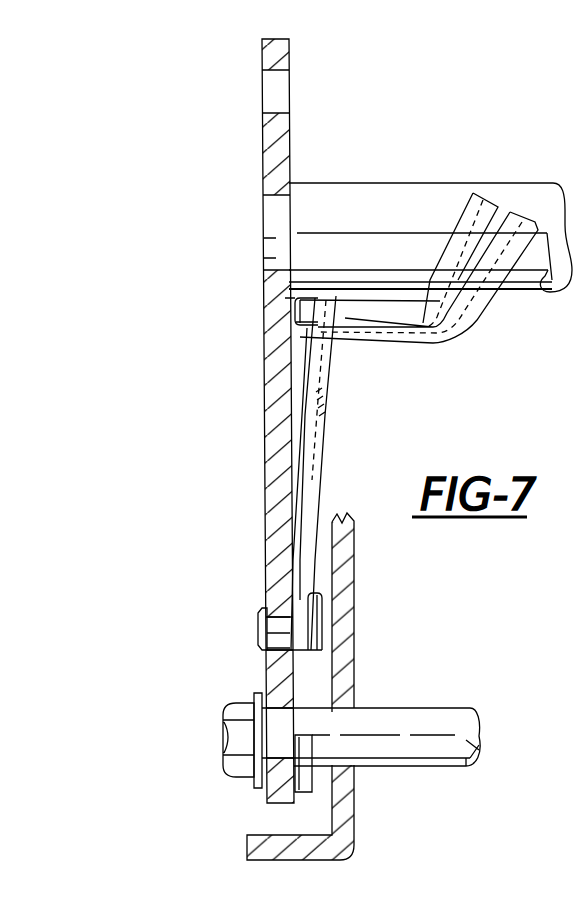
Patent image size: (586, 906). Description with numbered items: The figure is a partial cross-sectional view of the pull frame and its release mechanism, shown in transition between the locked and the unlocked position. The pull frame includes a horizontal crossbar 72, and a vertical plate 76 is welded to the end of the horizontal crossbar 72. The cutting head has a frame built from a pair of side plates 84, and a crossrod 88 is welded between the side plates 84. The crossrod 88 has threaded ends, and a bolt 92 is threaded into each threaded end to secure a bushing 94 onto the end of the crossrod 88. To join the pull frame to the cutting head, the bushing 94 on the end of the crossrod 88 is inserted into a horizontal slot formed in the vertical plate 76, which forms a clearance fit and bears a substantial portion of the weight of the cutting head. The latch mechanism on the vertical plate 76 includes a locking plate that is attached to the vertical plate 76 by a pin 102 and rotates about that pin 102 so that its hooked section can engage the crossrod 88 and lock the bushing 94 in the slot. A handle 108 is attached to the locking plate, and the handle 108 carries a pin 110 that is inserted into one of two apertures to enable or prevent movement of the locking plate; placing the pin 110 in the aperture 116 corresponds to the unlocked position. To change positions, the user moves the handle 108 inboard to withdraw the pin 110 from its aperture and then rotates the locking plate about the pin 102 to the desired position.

The horizontal crossbar 72 is at (402, 188).
The vertical plate 76 is at (273, 410).
The side plate 84 is at (354, 625).
The crossrod 88 is at (455, 715).
The bolt 92 is at (232, 738).
The bushing 94 is at (255, 718).
The pin 102 is at (262, 633).
The handle 108 is at (483, 302).
The pin 110 is at (298, 326).
The aperture 116 is at (277, 320).